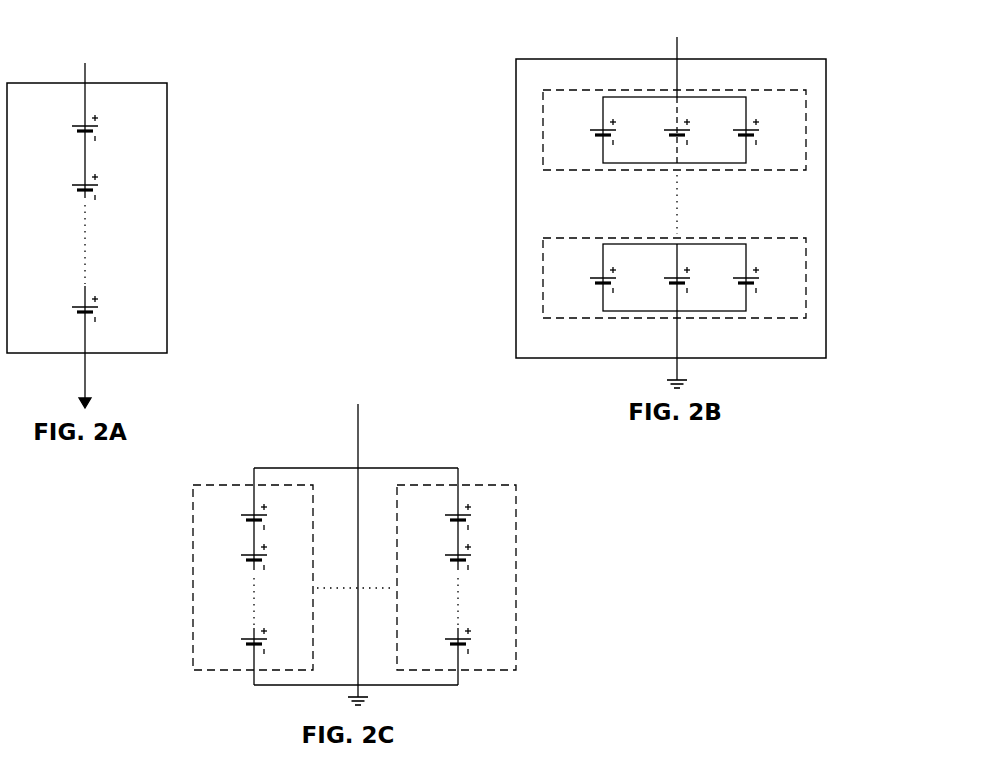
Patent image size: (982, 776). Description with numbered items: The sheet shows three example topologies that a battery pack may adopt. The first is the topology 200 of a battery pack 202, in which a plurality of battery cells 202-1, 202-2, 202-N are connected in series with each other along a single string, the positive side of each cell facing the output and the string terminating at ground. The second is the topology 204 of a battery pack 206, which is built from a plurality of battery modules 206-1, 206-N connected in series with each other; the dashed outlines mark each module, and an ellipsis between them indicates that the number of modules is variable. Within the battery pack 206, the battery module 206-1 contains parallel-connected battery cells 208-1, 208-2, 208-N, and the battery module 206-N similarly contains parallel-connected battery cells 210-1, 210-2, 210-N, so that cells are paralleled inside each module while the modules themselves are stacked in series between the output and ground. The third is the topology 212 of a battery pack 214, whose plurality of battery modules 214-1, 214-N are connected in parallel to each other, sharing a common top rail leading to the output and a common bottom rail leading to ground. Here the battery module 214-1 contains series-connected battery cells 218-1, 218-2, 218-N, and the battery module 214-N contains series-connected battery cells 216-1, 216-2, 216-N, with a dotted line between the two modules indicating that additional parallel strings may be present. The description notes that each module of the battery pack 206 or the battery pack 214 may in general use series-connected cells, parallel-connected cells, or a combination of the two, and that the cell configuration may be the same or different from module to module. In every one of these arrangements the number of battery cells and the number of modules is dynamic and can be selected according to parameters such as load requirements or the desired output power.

In FIG. 2A, the topology 200 is at (127, 224).
In FIG. 2A, the battery pack 202 is at (167, 100).
In FIG. 2A, the battery cell 202-1 is at (62, 128).
In FIG. 2A, the battery cell 202-2 is at (62, 187).
In FIG. 2A, the battery cell 202-N is at (62, 309).
In FIG. 2B, the topology 204 is at (706, 202).
In FIG. 2B, the battery pack 206 is at (826, 97).
In FIG. 2B, the battery module 206-1 is at (810, 152).
In FIG. 2B, the battery module 206-N is at (810, 300).
In FIG. 2B, the battery cell 208-1 is at (584, 132).
In FIG. 2B, the battery cell 208-2 is at (658, 132).
In FIG. 2B, the battery cell 208-N is at (726, 132).
In FIG. 2B, the battery cell 210-1 is at (584, 280).
In FIG. 2B, the battery cell 210-2 is at (658, 280).
In FIG. 2B, the battery cell 210-N is at (726, 280).
In FIG. 2C, the topology 212 is at (374, 543).
In FIG. 2C, the battery pack 214 is at (458, 468).
In FIG. 2C, the battery module 214-1 is at (516, 552).
In FIG. 2C, the battery module 214-N is at (193, 568).
In FIG. 2C, the battery cell 216-1 is at (235, 517).
In FIG. 2C, the battery cell 216-2 is at (235, 557).
In FIG. 2C, the battery cell 216-N is at (234, 641).
In FIG. 2C, the battery cell 218-1 is at (439, 517).
In FIG. 2C, the battery cell 218-2 is at (439, 557).
In FIG. 2C, the battery cell 218-N is at (438, 641).